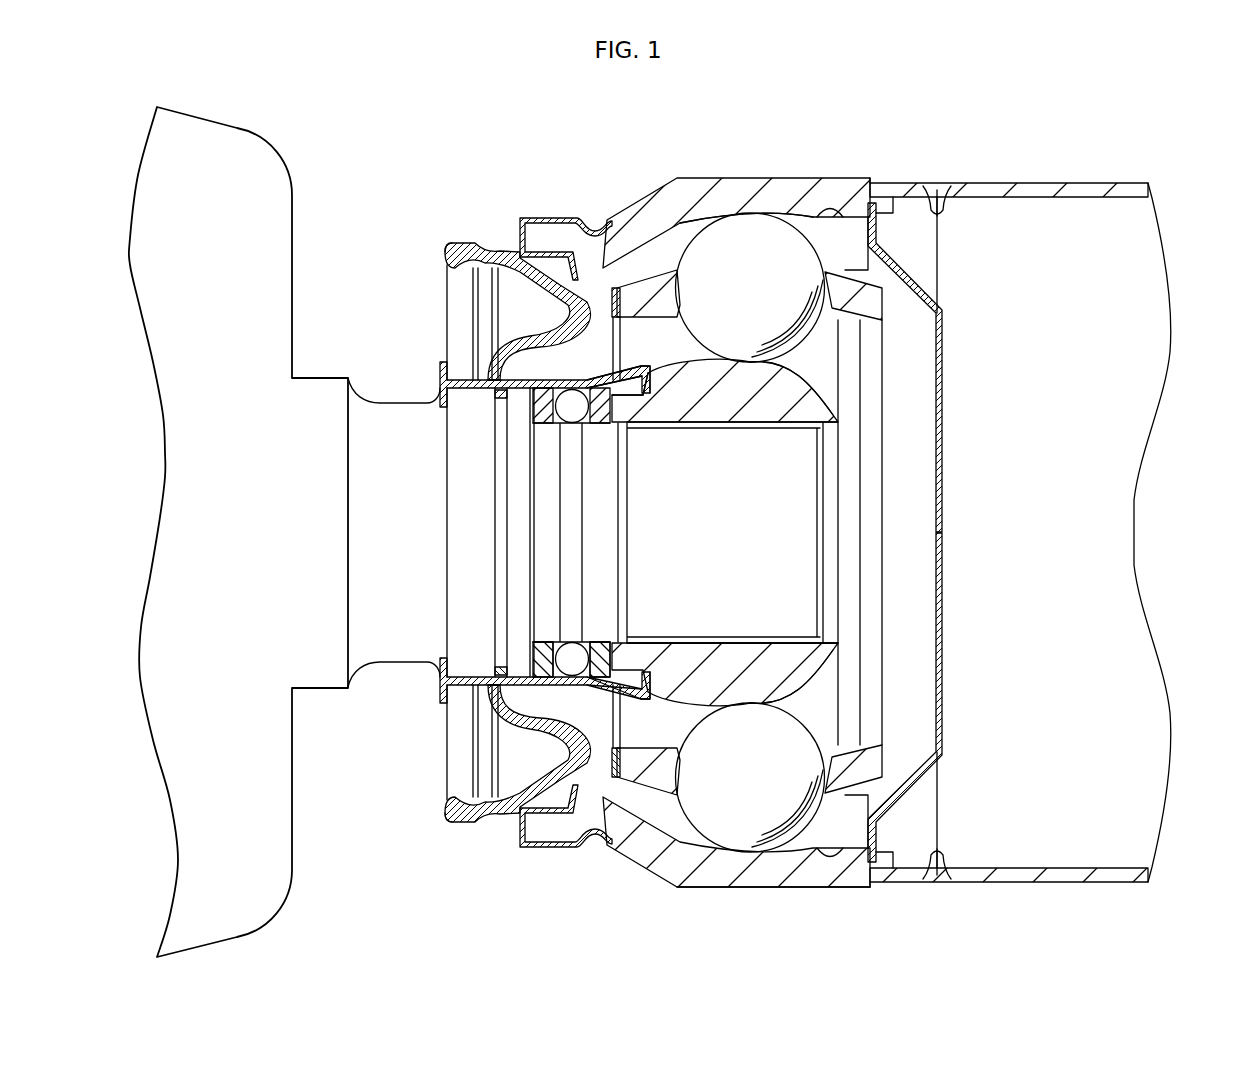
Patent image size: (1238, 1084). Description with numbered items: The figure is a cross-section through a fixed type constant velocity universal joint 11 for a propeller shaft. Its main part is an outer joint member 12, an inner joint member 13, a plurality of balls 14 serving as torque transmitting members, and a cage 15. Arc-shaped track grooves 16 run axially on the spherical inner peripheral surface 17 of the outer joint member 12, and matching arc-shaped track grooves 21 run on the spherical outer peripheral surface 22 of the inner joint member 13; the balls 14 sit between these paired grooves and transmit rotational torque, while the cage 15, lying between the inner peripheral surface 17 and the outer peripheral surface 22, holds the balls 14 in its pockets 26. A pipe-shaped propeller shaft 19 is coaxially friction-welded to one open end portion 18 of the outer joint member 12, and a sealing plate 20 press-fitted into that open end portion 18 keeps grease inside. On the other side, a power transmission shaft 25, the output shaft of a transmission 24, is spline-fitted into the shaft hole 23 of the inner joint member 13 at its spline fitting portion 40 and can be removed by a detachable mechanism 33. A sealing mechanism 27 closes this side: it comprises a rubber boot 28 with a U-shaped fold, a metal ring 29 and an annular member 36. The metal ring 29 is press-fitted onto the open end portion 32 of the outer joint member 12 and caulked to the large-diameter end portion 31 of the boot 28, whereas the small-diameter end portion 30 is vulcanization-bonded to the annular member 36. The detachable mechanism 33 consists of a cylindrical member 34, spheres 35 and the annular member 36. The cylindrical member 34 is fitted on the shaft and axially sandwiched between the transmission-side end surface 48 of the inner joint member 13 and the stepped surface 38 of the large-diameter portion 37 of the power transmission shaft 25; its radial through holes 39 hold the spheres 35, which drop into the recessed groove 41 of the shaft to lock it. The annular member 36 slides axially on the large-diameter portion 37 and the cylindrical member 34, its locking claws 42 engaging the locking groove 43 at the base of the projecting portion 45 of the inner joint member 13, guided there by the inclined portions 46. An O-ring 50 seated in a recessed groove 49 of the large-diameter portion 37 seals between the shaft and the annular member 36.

The constant velocity universal joint 11 is at (748, 152).
The outer joint member 12 is at (770, 890).
The inner joint member 13 is at (832, 684).
The balls 14 is at (800, 230).
The cage 15 is at (890, 758).
The track grooves 16 is at (845, 845).
The spherical inner peripheral surface 17 is at (640, 782).
The open end portion 18 is at (937, 874).
The propeller shaft 19 is at (1048, 180).
The sealing plate 20 is at (942, 520).
The track grooves 21 is at (842, 376).
The spherical outer peripheral surface 22 is at (885, 290).
The shaft hole 23 is at (745, 645).
The transmission 24 is at (228, 126).
The power transmission shaft 25 is at (386, 668).
The pockets 26 is at (683, 275).
The sealing mechanism 27 is at (462, 826).
The boot 28 is at (537, 773).
The metal ring 29 is at (535, 848).
The small-diameter end portion 30 is at (477, 697).
The large-diameter end portion 31 is at (498, 808).
The open end portion 32 is at (553, 232).
The detachable mechanism 33 is at (545, 637).
The cylindrical member 34 is at (598, 643).
The spheres 35 is at (590, 613).
The annular member 36 is at (441, 399).
The large-diameter portion 37 is at (515, 537).
The stepped surface 38 is at (557, 400).
The through holes 39 is at (583, 685).
The spline fitting portion 40 is at (782, 410).
The recessed groove 41 is at (590, 527).
The locking claws 42 is at (640, 366).
The locking groove 43 is at (675, 422).
The projecting portion 45 is at (640, 422).
The inclined portions 46 is at (628, 706).
The transmission-side end surface 48 is at (601, 386).
The recessed groove 49 is at (497, 481).
The O-ring 50 is at (497, 394).